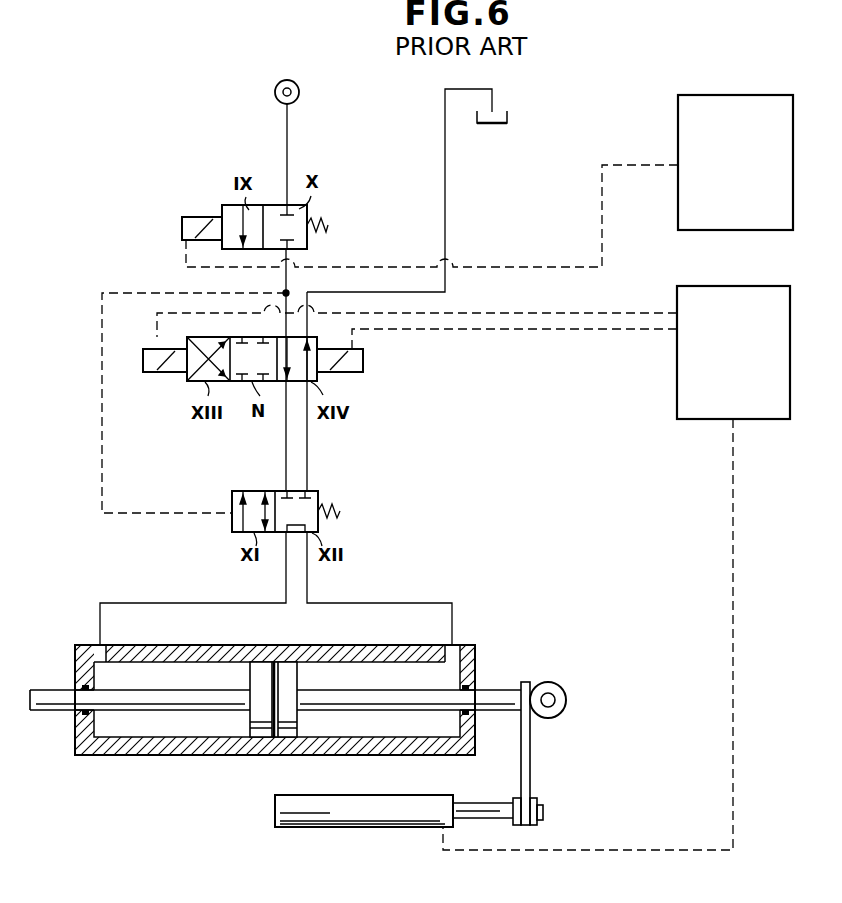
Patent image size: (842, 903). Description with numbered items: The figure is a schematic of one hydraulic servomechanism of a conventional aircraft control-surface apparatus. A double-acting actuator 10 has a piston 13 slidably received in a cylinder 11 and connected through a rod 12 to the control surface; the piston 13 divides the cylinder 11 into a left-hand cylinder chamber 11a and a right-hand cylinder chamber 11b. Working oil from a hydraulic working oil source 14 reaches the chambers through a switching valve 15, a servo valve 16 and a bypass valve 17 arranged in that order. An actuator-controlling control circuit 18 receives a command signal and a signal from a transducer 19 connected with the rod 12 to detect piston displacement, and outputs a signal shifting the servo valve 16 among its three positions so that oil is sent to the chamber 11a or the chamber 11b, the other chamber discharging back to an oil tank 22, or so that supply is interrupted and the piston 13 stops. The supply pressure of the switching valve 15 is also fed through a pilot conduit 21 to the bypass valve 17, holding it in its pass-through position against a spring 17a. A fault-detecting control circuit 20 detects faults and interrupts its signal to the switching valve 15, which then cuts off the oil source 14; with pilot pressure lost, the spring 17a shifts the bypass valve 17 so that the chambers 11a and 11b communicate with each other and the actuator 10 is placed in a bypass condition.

The double-acting actuator 10 is at (275, 693).
The cylinder 11 is at (216, 748).
The left-hand side cylinder chamber 11a is at (178, 672).
The right-hand side cylinder chamber 11b is at (365, 672).
The rod 12 is at (62, 708).
The piston 13 is at (290, 680).
The hydraulic working oil source 14 is at (299, 96).
The switching valve 15 is at (188, 214).
The servo valve 16 is at (366, 360).
The bypass valve 17 is at (314, 492).
The spring 17a is at (342, 510).
The control circuit 18 is at (720, 372).
The transducer 19 is at (363, 823).
The fault-detecting control circuit 20 is at (713, 178).
The pilot conduit 21 is at (100, 324).
The oil tank 22 is at (488, 125).